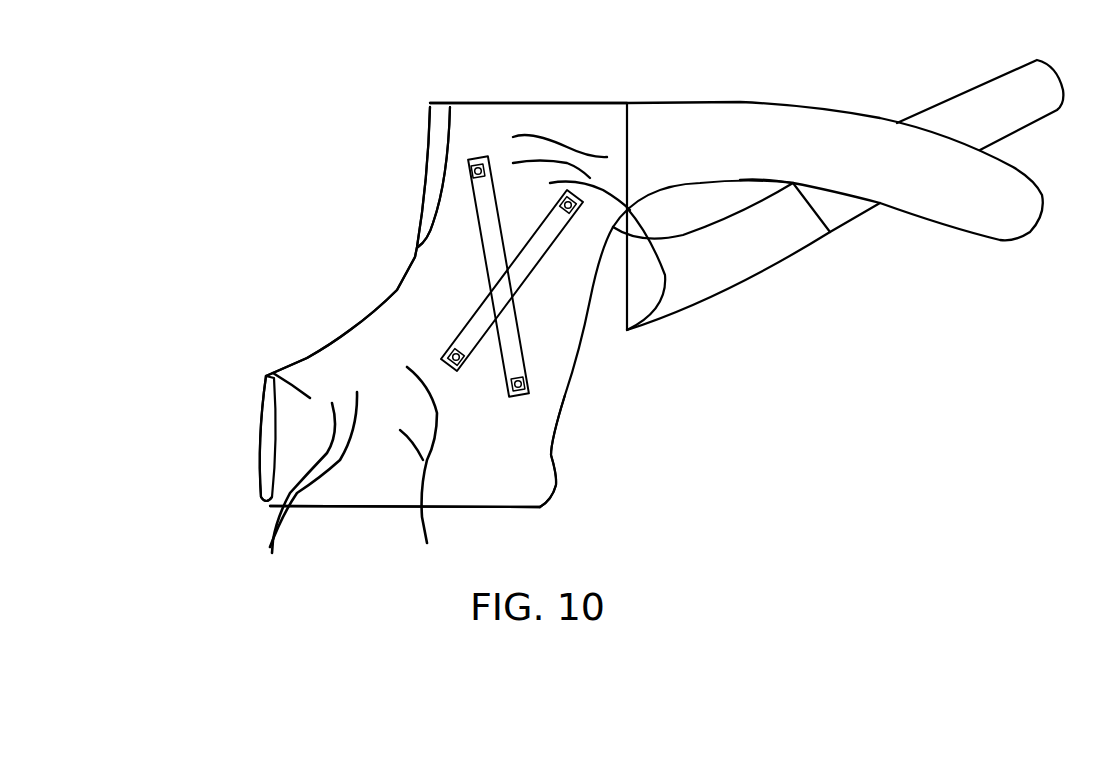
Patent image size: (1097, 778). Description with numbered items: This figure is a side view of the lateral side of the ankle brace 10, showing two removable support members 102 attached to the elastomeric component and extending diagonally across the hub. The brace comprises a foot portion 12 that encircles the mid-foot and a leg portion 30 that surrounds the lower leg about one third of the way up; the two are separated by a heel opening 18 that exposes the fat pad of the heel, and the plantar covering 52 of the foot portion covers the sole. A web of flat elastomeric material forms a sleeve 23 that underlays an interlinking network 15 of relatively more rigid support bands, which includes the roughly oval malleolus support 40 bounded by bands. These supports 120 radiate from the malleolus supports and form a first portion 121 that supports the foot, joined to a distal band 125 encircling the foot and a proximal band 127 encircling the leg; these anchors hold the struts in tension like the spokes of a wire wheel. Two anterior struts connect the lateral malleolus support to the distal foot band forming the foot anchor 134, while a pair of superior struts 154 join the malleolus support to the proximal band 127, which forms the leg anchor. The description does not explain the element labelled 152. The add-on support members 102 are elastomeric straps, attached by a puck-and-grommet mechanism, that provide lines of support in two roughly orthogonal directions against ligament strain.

The ankle brace 10 is at (549, 80).
The foot portion 12 is at (313, 352).
The interlinking network of support bands 15 is at (470, 103).
The heel opening 18 is at (560, 443).
The sleeve 23 is at (407, 283).
The leg portion 30 is at (633, 143).
The medial malleolus support 40 is at (540, 327).
The plantar covering 52 is at (450, 513).
The support members 102 is at (492, 215).
The interlinking network of supports 120 is at (607, 157).
The first portion 121 is at (275, 360).
The distal band 125 is at (257, 457).
The proximal band 127 is at (597, 103).
The foot anchor 134 is at (260, 420).
The padding strip 152 is at (450, 472).
The superior struts 154 is at (540, 192).